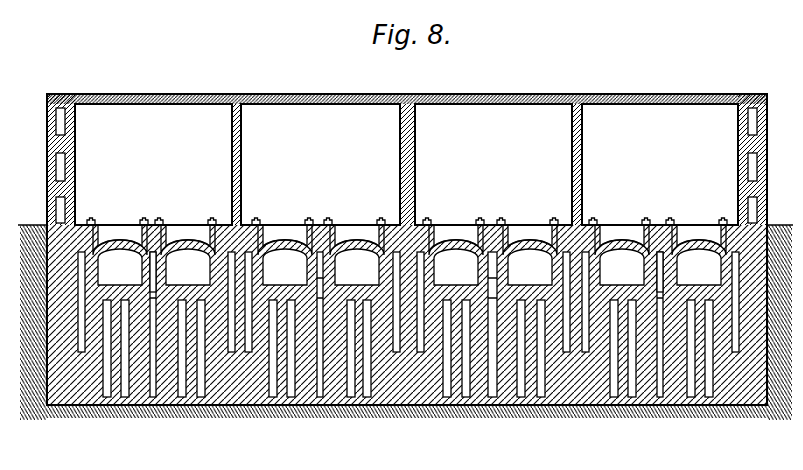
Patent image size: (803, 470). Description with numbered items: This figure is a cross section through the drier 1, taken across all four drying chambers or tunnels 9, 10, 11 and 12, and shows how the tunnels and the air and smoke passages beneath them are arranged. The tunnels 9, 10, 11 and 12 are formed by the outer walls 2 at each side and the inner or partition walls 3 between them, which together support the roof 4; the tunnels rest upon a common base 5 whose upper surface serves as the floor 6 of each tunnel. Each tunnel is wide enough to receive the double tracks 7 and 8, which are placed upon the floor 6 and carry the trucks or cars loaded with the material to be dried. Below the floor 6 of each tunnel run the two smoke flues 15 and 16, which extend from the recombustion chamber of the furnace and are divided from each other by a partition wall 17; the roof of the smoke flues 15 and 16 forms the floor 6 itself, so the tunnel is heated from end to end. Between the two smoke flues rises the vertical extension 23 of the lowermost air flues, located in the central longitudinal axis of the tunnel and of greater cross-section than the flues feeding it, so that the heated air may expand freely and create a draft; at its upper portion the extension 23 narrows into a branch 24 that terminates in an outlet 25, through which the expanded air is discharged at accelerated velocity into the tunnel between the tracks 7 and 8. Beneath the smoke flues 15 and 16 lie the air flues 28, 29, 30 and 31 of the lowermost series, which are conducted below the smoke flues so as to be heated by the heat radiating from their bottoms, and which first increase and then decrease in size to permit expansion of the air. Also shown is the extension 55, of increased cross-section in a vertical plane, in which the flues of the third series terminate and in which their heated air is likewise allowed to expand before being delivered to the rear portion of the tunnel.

The drier 1 is at (362, 104).
The outer wall 2 is at (47, 160).
The partition wall 3 is at (241, 157).
The roof 4 is at (363, 106).
The base 5 is at (410, 403).
The floor 6 is at (451, 223).
The track 7 is at (313, 220).
The track 8 is at (385, 220).
The drying tunnel 9 is at (138, 117).
The drying tunnel 10 is at (292, 110).
The drying tunnel 11 is at (480, 110).
The drying tunnel 12 is at (637, 110).
The smoke flue 15 is at (108, 262).
The smoke flue 16 is at (183, 262).
The partition wall 17 is at (484, 268).
The vertical extension 23 is at (155, 395).
The branch 24 is at (153, 257).
The outlet 25 is at (660, 222).
The air flue 28 is at (108, 400).
The air flue 29 is at (128, 402).
The air flue 30 is at (182, 400).
The air flue 31 is at (204, 402).
The extension 55 is at (82, 355).